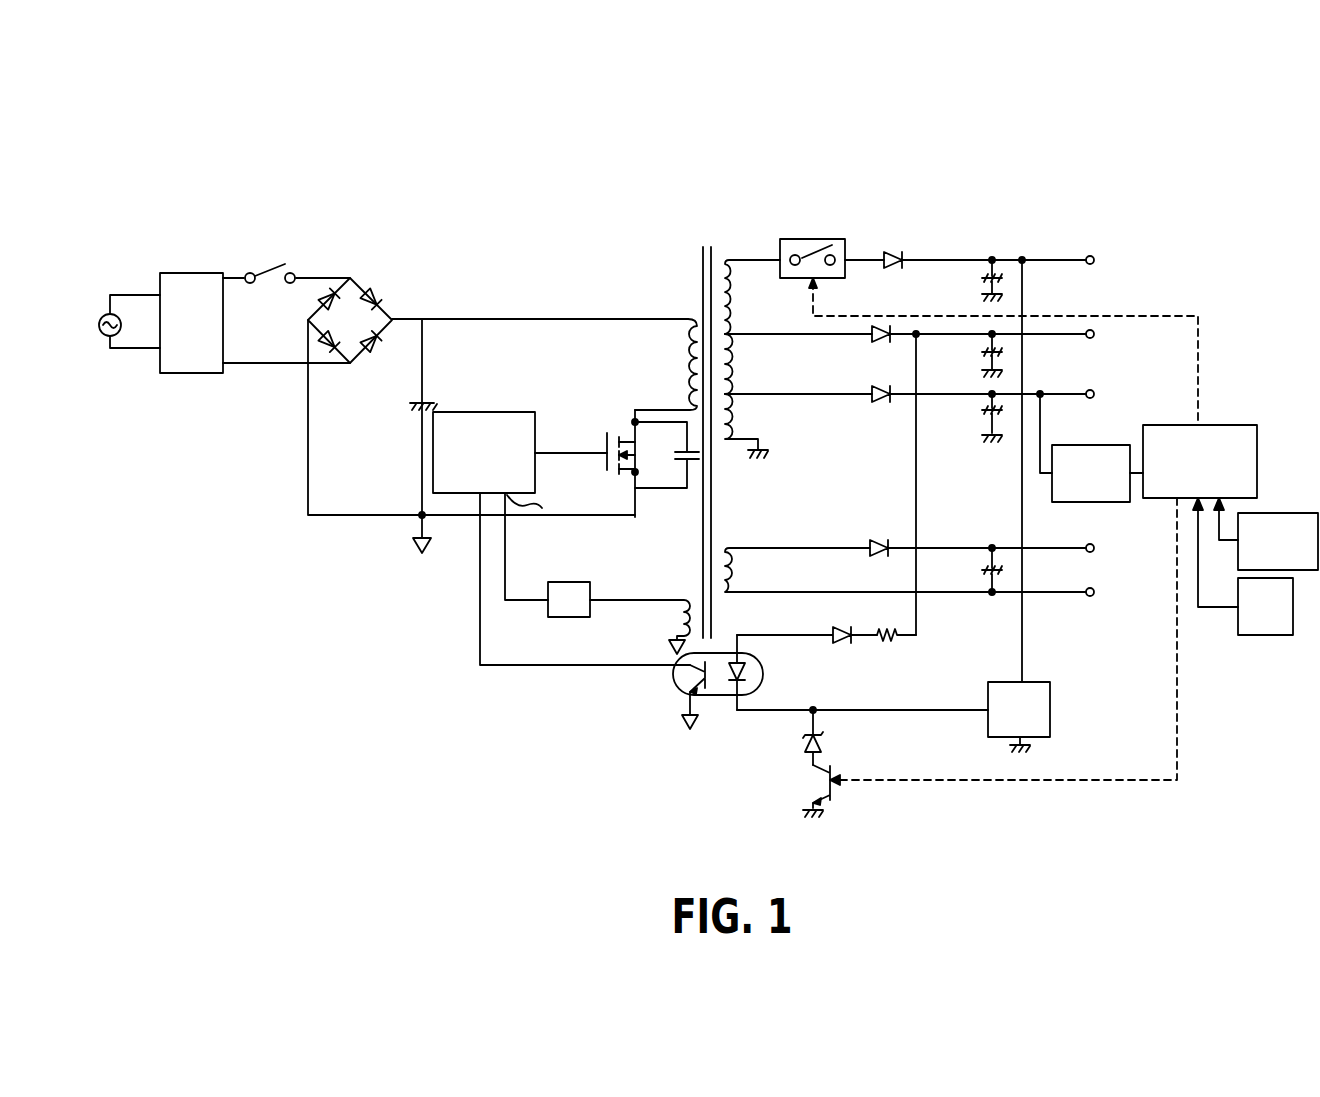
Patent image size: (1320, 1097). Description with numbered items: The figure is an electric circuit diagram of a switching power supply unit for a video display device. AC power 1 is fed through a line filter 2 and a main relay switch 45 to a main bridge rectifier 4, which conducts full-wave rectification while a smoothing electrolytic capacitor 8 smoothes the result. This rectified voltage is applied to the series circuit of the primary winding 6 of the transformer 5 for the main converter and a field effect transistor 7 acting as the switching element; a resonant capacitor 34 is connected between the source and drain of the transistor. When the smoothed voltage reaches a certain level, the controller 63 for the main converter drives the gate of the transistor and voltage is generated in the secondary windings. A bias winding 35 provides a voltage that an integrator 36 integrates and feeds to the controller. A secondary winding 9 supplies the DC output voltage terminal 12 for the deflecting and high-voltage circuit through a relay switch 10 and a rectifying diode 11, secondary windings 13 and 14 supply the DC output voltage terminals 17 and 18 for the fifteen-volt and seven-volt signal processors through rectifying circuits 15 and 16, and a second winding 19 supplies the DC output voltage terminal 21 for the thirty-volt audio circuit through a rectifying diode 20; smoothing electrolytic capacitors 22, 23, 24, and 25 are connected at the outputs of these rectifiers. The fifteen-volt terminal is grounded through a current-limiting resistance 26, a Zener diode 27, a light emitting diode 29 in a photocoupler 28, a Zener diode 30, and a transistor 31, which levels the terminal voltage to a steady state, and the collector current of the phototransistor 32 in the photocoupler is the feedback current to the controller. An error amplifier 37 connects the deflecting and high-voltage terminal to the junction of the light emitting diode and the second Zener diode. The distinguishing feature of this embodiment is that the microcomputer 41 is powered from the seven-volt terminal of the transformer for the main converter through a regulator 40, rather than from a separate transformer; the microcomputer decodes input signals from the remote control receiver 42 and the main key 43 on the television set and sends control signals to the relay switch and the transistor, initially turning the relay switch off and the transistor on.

The AC power 1 is at (126, 293).
The line filter 2 is at (178, 373).
The main bridge rectifier 4 is at (358, 290).
The transformer for the main converter 5 is at (702, 280).
The primary winding 6 is at (688, 332).
The field effect transistor 7 is at (622, 438).
The smoothing electrolytic capacitor 8 is at (439, 400).
The secondary winding 9 is at (733, 297).
The relay switch 10 is at (818, 239).
The rectifying diode 11 is at (902, 258).
The DC output voltage terminal 12 is at (1070, 258).
The secondary winding 13 is at (738, 350).
The secondary winding 14 is at (738, 400).
The rectifying circuit 15 is at (868, 345).
The rectifying circuit 16 is at (876, 404).
The DC output voltage terminal 17 is at (1033, 335).
The DC output voltage terminal 18 is at (1057, 395).
The second winding 19 is at (740, 560).
The rectifying diode 20 is at (875, 557).
The DC output voltage terminal 21 is at (1037, 548).
The smoothing electrolytic capacitor 22 is at (977, 279).
The smoothing electrolytic capacitor 23 is at (980, 350).
The smoothing electrolytic capacitor 24 is at (978, 415).
The smoothing electrolytic capacitor 25 is at (980, 572).
The current-limiting resistance 26 is at (899, 640).
The Zener diode 27 is at (835, 632).
The photocoupler 28 is at (673, 680).
The light emitting diode 29 is at (763, 682).
The Zener diode 30 is at (820, 744).
The transistor 31 is at (828, 778).
The phototransistor 32 is at (716, 691).
The resonant capacitor 34 is at (678, 446).
The bias winding 35 is at (672, 615).
The integrator 36 is at (548, 616).
The error amplifier 37 is at (1050, 695).
The regulator 40 is at (1080, 502).
The microcomputer 41 is at (1237, 425).
The remote control receiver 42 is at (1277, 513).
The main key 43 is at (1262, 637).
The main relay switch 45 is at (270, 268).
The controller for the main converter 63 is at (504, 412).